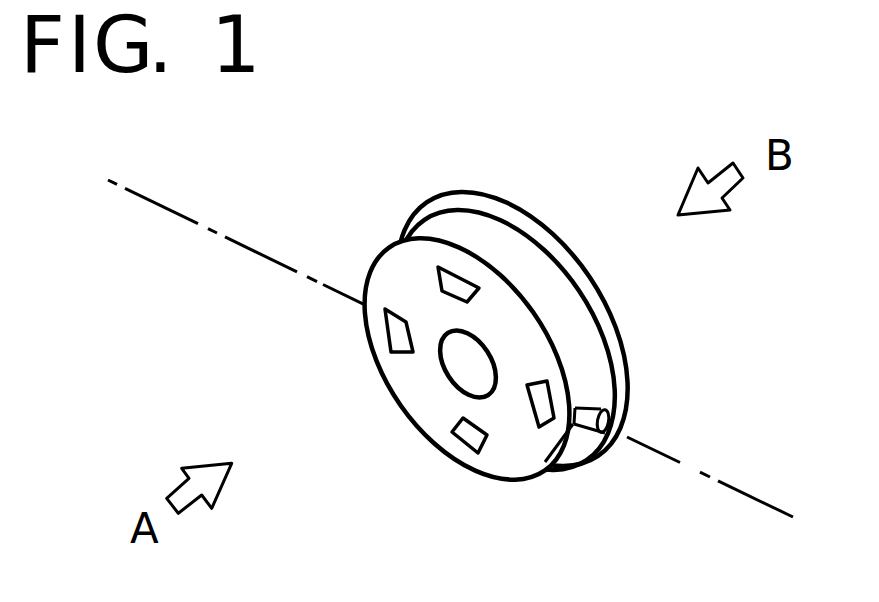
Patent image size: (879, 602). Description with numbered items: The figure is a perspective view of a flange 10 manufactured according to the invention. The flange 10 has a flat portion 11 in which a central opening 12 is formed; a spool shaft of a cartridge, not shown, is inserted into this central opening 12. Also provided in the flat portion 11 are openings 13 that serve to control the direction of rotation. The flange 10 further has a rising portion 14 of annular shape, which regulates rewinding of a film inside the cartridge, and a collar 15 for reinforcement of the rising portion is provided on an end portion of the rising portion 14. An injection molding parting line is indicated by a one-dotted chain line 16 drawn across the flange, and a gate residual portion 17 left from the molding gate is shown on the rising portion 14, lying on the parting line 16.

The flange 10 is at (443, 187).
The flat portion 11 is at (413, 407).
The central opening 12 is at (457, 373).
The openings 13 is at (396, 338).
The rising portion 14 is at (480, 233).
The collar 15 is at (580, 280).
The one-dotted chain line 16 is at (680, 465).
The gate residual portion 17 is at (580, 404).